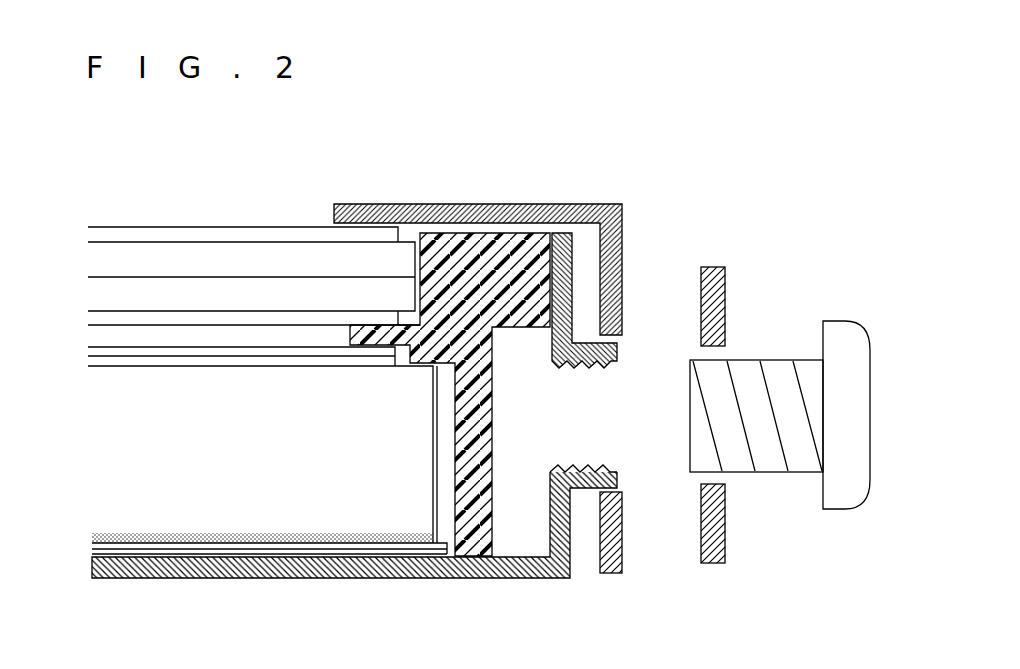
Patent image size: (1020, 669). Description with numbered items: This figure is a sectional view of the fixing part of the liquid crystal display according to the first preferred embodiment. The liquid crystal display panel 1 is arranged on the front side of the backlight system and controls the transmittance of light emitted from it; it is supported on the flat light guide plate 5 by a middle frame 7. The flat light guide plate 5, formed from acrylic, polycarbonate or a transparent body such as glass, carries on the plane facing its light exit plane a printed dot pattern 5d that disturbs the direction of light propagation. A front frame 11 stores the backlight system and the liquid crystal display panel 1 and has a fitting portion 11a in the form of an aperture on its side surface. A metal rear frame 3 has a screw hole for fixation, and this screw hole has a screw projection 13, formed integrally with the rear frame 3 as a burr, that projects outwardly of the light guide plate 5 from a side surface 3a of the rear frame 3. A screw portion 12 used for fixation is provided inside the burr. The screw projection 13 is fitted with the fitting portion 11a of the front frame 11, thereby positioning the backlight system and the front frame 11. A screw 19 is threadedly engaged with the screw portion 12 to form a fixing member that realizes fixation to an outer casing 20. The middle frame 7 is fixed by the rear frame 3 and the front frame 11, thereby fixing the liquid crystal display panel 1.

The liquid crystal display panel 1 is at (78, 218).
The rear frame 3 is at (92, 563).
The side surface 3a is at (572, 533).
The flat light guide plate 5 is at (110, 448).
The printed dot pattern 5d is at (125, 533).
The middle frame 7 is at (473, 243).
The front frame 11 is at (623, 273).
The fitting portion 11a is at (622, 505).
The screw portion 12 is at (597, 360).
The screw projection 13 is at (618, 480).
The screw 19 is at (838, 321).
The outer casing 20 is at (725, 293).